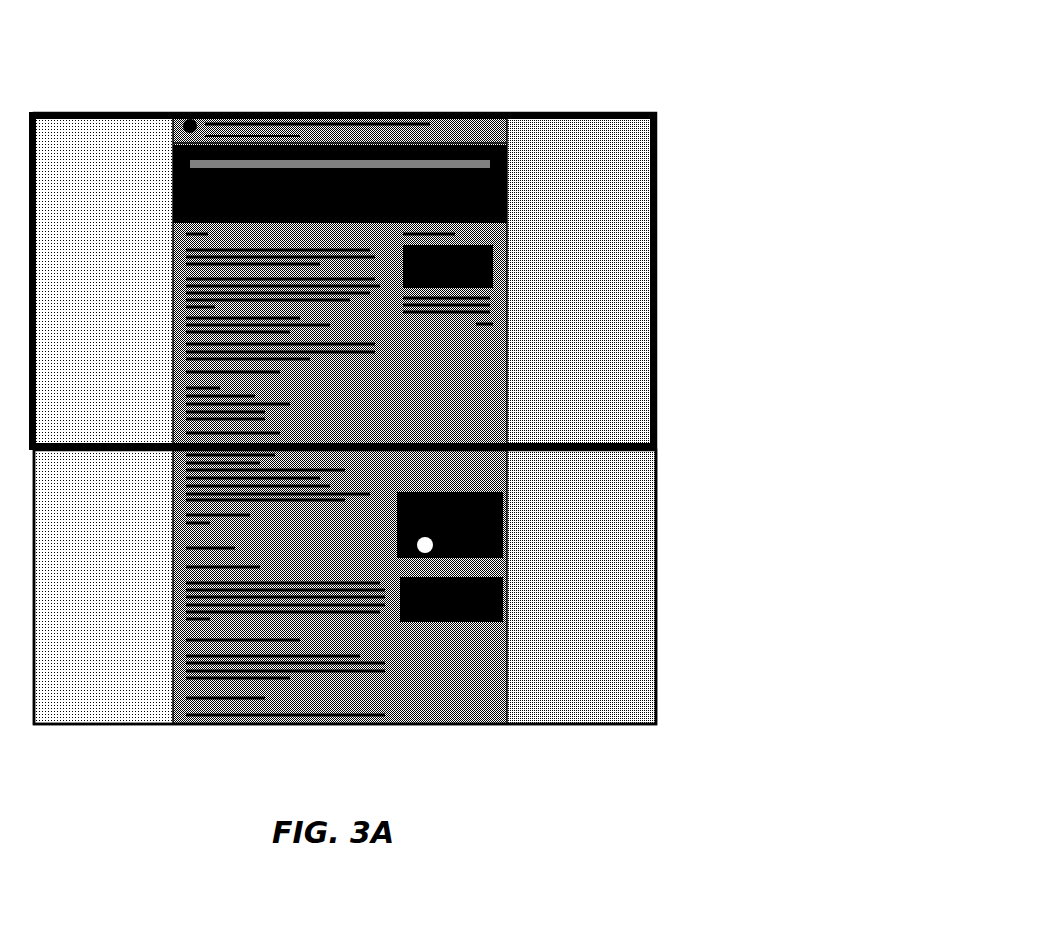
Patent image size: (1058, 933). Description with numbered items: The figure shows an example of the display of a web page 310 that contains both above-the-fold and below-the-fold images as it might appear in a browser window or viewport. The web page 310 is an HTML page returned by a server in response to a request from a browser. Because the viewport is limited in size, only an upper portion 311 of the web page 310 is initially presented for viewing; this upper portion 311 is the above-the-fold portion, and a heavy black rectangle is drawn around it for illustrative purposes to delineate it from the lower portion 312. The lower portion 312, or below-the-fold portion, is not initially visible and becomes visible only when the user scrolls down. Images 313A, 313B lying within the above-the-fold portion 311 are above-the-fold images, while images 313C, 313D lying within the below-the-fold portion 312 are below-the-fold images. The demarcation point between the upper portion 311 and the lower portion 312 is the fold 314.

The web page 310 is at (666, 84).
The above-the-fold portion 311 is at (603, 352).
The below-the-fold portion 312 is at (622, 503).
The above-the-fold image 313A is at (503, 172).
The above-the-fold image 313B is at (503, 258).
The below-the-fold image 313C is at (503, 528).
The below-the-fold image 313D is at (503, 602).
The fold 314 is at (658, 442).